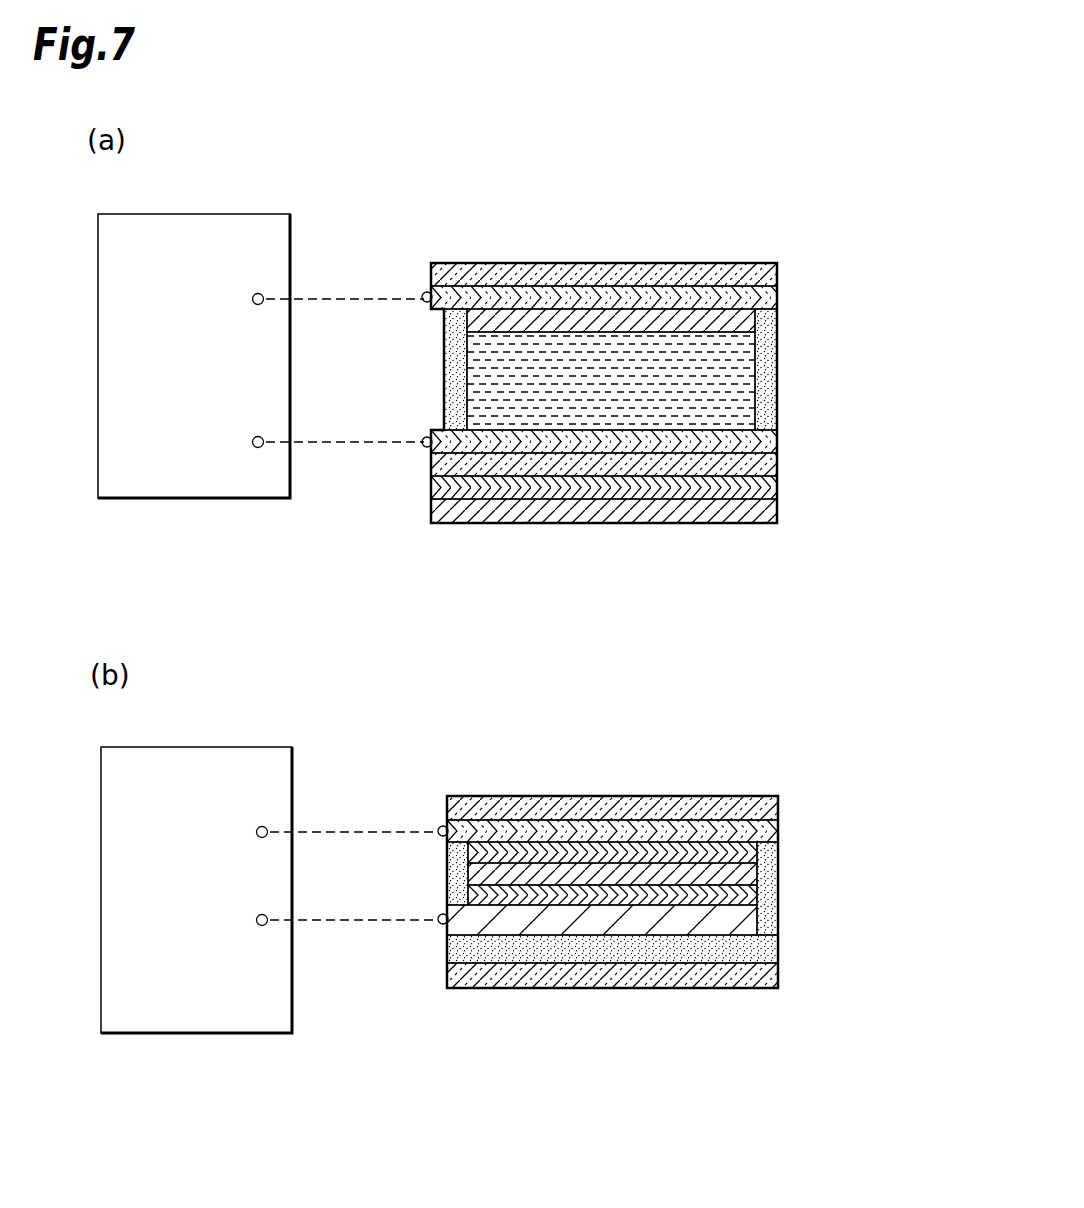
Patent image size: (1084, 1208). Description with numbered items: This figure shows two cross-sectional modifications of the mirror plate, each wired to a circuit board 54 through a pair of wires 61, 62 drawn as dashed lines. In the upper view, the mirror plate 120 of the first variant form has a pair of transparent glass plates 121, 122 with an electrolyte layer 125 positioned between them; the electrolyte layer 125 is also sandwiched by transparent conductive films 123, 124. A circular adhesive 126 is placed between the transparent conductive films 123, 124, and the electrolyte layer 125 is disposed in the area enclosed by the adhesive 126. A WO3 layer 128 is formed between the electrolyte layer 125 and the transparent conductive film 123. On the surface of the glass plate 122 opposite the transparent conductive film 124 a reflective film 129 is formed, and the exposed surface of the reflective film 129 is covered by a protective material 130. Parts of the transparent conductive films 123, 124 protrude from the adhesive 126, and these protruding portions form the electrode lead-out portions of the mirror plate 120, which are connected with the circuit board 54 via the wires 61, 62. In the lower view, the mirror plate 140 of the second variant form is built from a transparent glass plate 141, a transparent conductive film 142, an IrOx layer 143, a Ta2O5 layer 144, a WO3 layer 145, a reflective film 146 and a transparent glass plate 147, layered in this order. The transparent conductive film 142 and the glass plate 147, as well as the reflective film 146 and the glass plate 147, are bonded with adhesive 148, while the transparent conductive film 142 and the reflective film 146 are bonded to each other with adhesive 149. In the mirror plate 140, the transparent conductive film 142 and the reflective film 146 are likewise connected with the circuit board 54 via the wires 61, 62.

The circuit board 54 is at (220, 223).
The wire 61 is at (360, 298).
The wire 62 is at (362, 445).
The mirror plate 120 is at (641, 376).
The transparent glass plate 121 is at (728, 268).
The transparent glass plate 122 is at (768, 465).
The transparent conductive film 123 is at (770, 293).
The transparent conductive film 124 is at (760, 433).
The electrolyte layer 125 is at (738, 363).
The adhesive 126 is at (765, 408).
The WO3 layer 128 is at (745, 322).
The reflective film 129 is at (770, 492).
The protective material 130 is at (705, 513).
The mirror plate 140 is at (606, 877).
The transparent glass plate 141 is at (752, 800).
The transparent conductive film 142 is at (763, 833).
The IrOx layer 143 is at (763, 847).
The Ta2O5 layer 144 is at (750, 875).
The WO3 layer 145 is at (748, 893).
The reflective film 146 is at (748, 923).
The transparent glass plate 147 is at (728, 978).
The adhesive 148 is at (772, 950).
The adhesive 149 is at (450, 867).